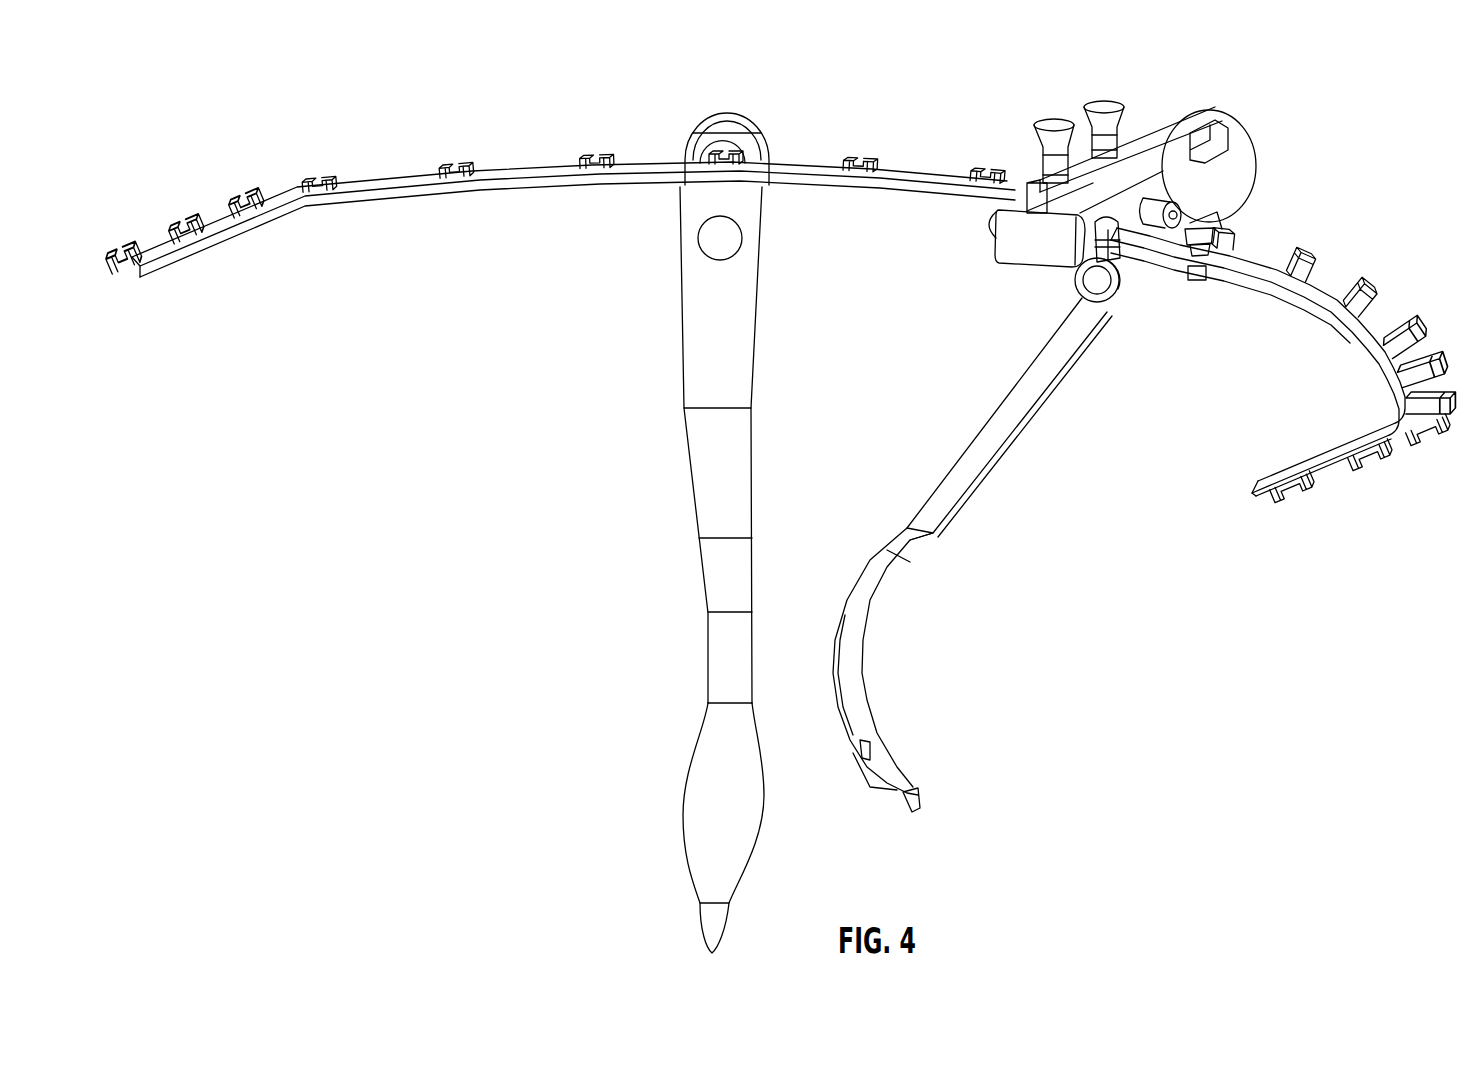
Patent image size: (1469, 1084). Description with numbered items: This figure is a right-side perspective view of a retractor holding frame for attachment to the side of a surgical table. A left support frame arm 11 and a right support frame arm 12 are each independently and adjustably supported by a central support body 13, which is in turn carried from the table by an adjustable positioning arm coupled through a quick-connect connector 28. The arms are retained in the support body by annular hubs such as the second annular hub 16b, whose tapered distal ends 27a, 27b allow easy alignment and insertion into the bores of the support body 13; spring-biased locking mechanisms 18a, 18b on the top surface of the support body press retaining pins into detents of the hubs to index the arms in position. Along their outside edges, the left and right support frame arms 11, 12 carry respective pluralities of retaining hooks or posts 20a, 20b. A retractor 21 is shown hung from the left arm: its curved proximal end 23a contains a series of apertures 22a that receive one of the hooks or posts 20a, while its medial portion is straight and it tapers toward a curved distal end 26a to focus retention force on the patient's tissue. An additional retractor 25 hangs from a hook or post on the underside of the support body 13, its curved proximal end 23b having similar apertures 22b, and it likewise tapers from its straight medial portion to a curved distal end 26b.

The left support frame arm 11 is at (405, 205).
The right support frame arm 12 is at (1380, 368).
The support body 13 is at (1240, 186).
The second annular hub 16b is at (1105, 248).
The first spring-biased locking mechanism 18a is at (1105, 103).
The second spring-biased locking mechanism 18b is at (1055, 120).
The retaining hooks or posts 20a is at (178, 225).
The retaining hooks or posts 20b is at (1322, 268).
The retractor 21 is at (686, 492).
The apertures 22a is at (700, 233).
The apertures 22b is at (1100, 286).
The proximal end 23a is at (728, 116).
The proximal end 23b is at (1076, 283).
The additional retractor 25 is at (977, 455).
The distal end 26a is at (722, 940).
The distal end 26b is at (925, 812).
The tapered distal end 27a is at (1222, 114).
The tapered distal end 27b is at (988, 210).
The quick-connect connector 28 is at (1202, 280).